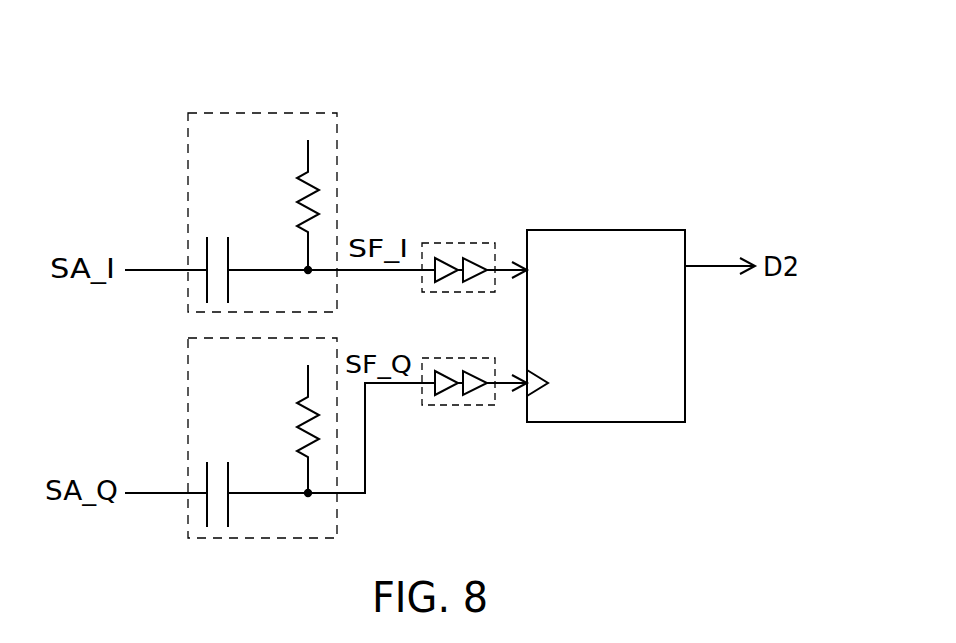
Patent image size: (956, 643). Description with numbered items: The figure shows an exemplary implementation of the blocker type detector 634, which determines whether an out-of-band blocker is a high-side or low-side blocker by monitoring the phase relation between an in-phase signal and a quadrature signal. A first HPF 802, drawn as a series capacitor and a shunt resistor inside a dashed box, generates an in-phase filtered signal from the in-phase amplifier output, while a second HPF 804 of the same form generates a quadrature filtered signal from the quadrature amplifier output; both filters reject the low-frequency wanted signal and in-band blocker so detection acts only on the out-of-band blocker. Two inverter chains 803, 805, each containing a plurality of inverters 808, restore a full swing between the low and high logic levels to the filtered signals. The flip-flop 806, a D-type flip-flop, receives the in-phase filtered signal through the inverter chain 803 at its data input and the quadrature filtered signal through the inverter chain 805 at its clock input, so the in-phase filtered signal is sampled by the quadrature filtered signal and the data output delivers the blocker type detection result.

The blocker type detector 634 is at (708, 116).
The first HPF 802 is at (188, 212).
The second HPF 804 is at (188, 438).
The inverter chain 803 is at (457, 243).
The inverters 808 is at (455, 292).
The inverter chain 805 is at (458, 405).
The flip-flop 806 is at (619, 230).